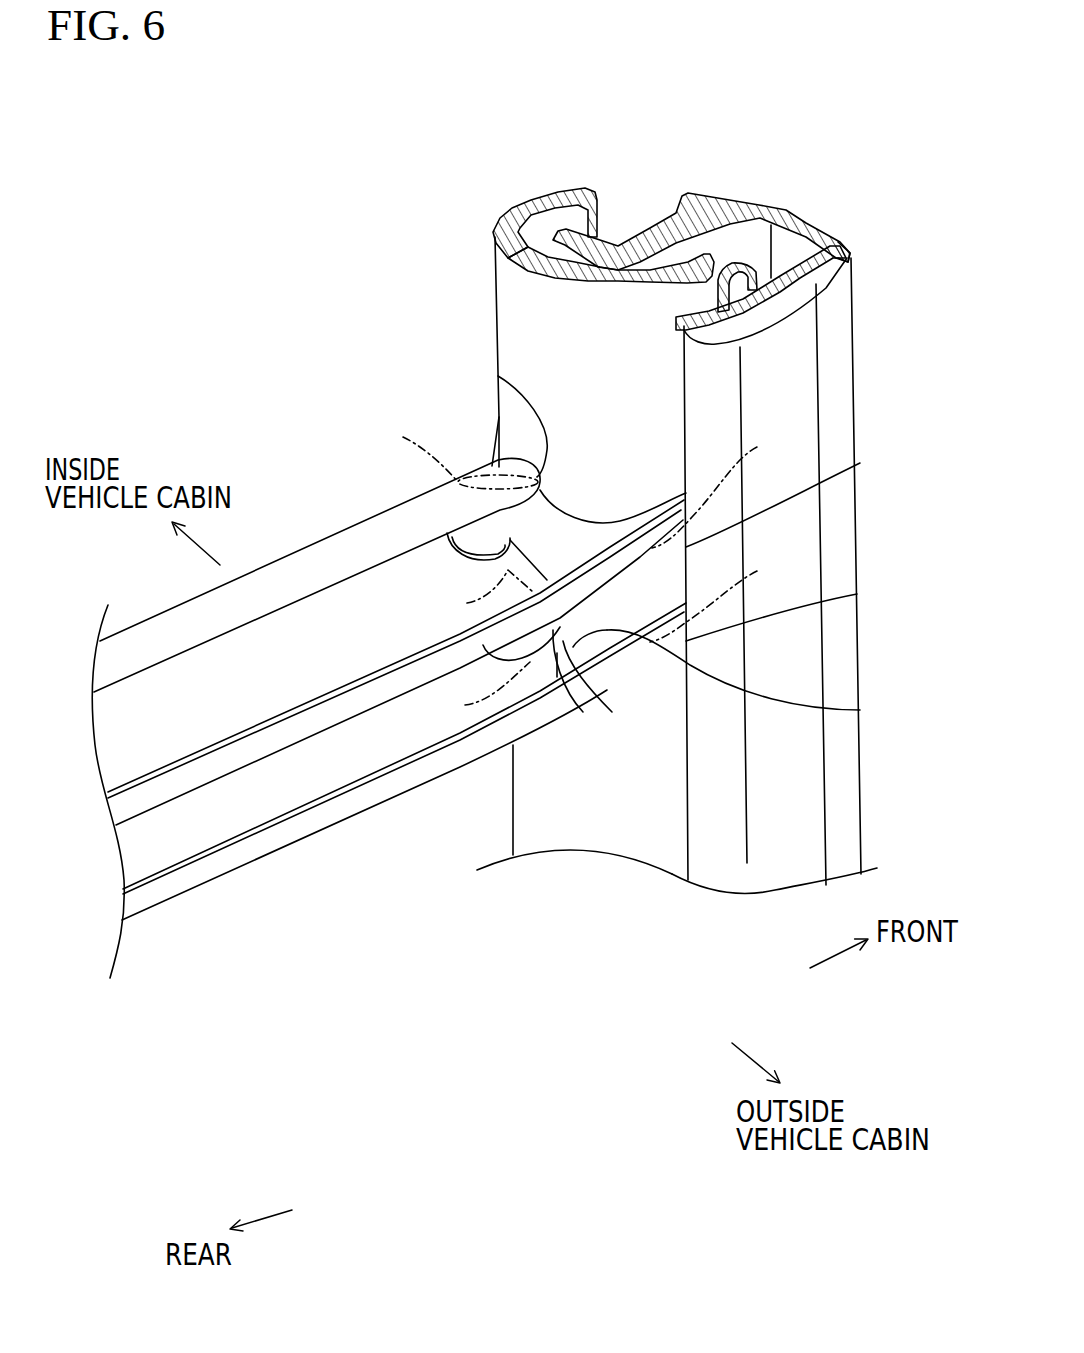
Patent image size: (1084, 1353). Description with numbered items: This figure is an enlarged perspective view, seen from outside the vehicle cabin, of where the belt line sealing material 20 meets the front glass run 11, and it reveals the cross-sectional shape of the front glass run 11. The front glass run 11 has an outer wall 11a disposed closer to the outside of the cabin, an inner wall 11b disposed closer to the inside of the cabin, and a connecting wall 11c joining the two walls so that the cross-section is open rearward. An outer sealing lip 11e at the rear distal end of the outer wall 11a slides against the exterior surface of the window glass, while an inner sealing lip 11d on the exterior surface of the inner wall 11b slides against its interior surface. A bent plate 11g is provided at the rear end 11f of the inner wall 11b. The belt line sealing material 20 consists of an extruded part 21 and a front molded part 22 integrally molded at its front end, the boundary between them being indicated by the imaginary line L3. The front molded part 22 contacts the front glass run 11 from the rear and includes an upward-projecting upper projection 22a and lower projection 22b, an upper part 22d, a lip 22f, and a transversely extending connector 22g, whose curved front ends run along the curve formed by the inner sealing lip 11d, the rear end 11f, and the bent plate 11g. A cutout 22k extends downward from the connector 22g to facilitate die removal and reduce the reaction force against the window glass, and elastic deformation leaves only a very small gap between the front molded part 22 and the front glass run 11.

The front glass run 11 is at (864, 540).
The outer wall 11a is at (789, 353).
The inner wall 11b is at (676, 200).
The connecting wall 11c is at (806, 220).
The inner sealing lip 11d is at (709, 287).
The outer sealing lip 11e is at (818, 288).
The rear end 11f is at (555, 272).
The bent plate 11g is at (550, 196).
The belt line sealing material 20 is at (318, 535).
The extruded part 21 is at (307, 836).
The front molded part 22 is at (513, 458).
The upper projection 22a is at (858, 463).
The lower projection 22b is at (858, 598).
The upper part 22d is at (583, 532).
The lip 22f is at (497, 378).
The connector 22g is at (612, 712).
The cutout 22k is at (862, 710).
The imaginary line L3 is at (584, 569).